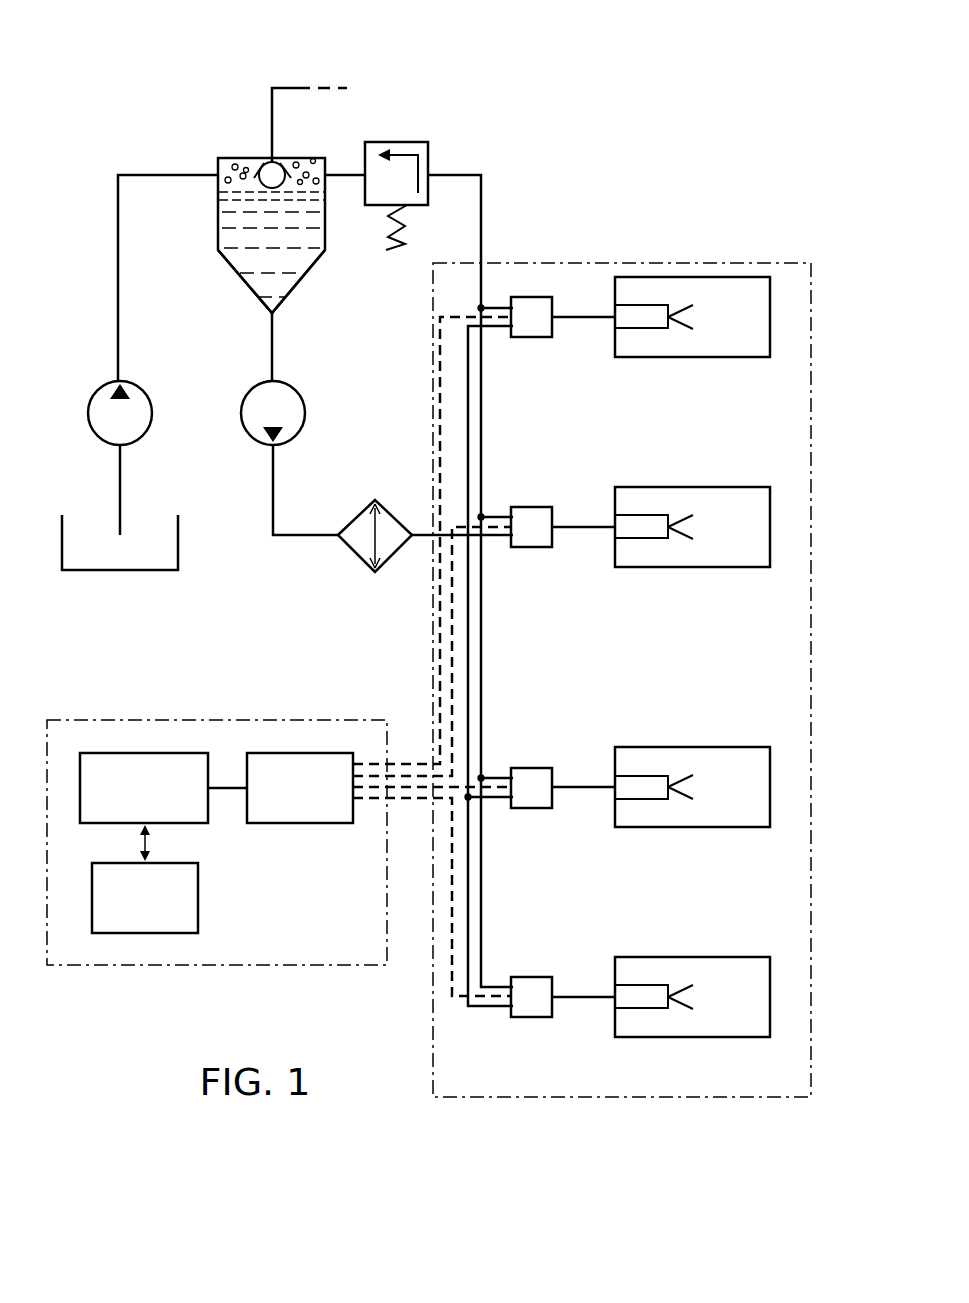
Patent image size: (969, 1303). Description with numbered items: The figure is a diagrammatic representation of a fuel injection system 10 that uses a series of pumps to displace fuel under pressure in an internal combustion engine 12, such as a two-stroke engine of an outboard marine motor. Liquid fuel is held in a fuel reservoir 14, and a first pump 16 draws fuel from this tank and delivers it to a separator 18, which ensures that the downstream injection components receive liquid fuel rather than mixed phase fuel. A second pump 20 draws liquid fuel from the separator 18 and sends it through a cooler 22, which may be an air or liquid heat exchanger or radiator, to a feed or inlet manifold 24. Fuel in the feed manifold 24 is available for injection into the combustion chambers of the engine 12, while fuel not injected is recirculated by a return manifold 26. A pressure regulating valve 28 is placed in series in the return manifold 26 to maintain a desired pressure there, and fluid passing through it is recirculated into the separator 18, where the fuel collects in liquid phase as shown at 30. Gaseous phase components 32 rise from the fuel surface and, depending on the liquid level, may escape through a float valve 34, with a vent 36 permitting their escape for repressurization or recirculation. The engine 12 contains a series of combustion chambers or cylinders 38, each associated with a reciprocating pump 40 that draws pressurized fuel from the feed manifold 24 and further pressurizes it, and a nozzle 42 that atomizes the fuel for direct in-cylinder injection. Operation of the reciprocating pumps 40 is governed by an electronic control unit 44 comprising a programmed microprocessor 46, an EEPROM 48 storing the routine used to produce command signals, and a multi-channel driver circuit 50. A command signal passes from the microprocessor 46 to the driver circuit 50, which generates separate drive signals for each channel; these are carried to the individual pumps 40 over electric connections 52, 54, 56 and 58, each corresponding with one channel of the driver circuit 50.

The fuel injection system 10 is at (598, 182).
The internal combustion engine 12 is at (705, 1099).
The fuel reservoir 14 is at (74, 572).
The first pump 16 is at (93, 400).
The separator 18 is at (232, 268).
The second pump 20 is at (243, 397).
The cooler 22 is at (355, 562).
The feed manifold 24 is at (467, 562).
The return manifold 26 is at (483, 277).
The pressure regulating valve 28 is at (397, 142).
The liquid phase fuel 30 is at (304, 262).
The gaseous phase components 32 is at (296, 160).
The float valve 34 is at (258, 167).
The vent 36 is at (284, 84).
The combustion chamber 38 is at (770, 317).
The reciprocating pump 40 is at (537, 297).
The nozzle 42 is at (640, 328).
The electronic control unit 44 is at (47, 842).
The microprocessor 46 is at (146, 753).
The EEPROM 48 is at (142, 933).
The driver circuit 50 is at (300, 823).
The electric connection 52 is at (372, 760).
The electric connection 54 is at (401, 772).
The electric connection 56 is at (390, 789).
The electric connection 58 is at (377, 802).